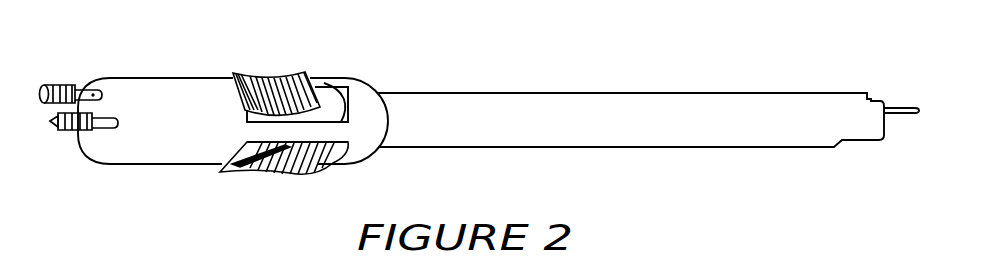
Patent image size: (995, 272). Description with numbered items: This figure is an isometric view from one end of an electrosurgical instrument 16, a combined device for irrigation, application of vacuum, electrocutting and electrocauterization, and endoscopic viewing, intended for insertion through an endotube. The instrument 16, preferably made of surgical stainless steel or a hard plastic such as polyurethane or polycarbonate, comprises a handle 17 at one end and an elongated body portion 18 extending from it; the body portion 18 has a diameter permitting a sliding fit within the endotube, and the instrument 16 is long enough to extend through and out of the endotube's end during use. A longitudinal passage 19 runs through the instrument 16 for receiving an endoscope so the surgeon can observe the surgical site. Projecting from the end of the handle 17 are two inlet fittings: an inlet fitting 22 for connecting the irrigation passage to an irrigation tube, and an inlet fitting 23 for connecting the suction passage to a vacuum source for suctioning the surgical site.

The electrosurgical instrument 16 is at (452, 85).
The handle 17 is at (172, 92).
The body portion 18 is at (725, 116).
The longitudinal passage 19 is at (88, 128).
The inlet fitting 22 is at (43, 86).
The inlet fitting 23 is at (58, 130).